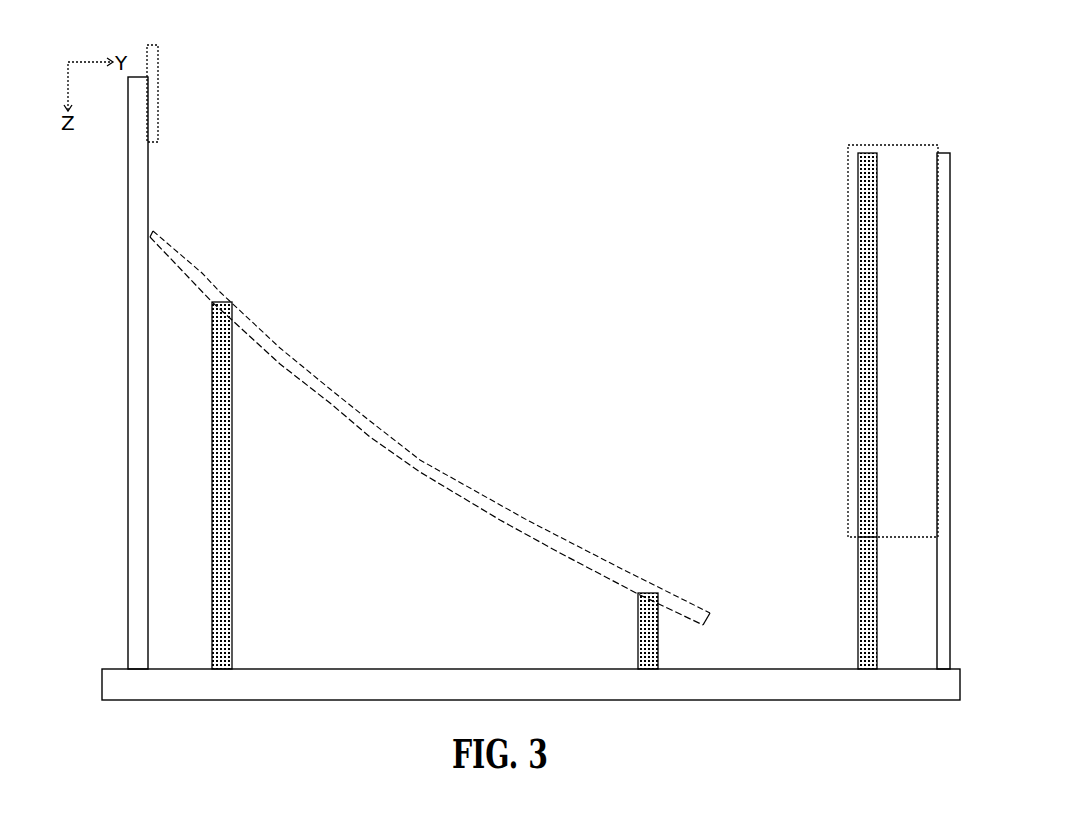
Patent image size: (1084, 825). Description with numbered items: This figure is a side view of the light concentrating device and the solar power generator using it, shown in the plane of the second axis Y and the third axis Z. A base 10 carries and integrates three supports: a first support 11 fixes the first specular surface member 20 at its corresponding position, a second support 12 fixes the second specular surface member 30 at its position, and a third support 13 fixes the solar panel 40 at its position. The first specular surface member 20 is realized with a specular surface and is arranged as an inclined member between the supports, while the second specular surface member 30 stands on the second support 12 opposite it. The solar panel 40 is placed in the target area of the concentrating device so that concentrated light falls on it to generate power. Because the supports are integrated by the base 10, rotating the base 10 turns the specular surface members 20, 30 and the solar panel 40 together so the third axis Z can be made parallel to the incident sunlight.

The base 10 is at (433, 678).
The first support 11 is at (228, 497).
The second support 12 is at (858, 612).
The third support 13 is at (128, 332).
The first specular surface member 20 is at (350, 412).
The second specular surface member 30 is at (910, 180).
The solar panel 40 is at (153, 63).